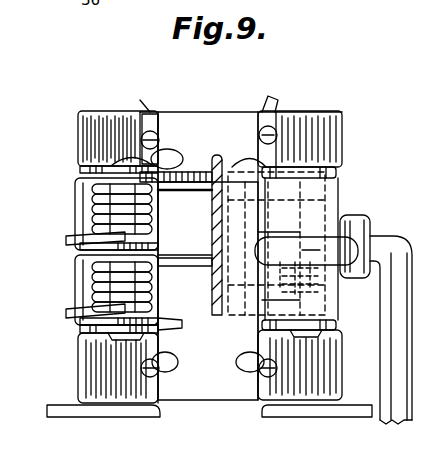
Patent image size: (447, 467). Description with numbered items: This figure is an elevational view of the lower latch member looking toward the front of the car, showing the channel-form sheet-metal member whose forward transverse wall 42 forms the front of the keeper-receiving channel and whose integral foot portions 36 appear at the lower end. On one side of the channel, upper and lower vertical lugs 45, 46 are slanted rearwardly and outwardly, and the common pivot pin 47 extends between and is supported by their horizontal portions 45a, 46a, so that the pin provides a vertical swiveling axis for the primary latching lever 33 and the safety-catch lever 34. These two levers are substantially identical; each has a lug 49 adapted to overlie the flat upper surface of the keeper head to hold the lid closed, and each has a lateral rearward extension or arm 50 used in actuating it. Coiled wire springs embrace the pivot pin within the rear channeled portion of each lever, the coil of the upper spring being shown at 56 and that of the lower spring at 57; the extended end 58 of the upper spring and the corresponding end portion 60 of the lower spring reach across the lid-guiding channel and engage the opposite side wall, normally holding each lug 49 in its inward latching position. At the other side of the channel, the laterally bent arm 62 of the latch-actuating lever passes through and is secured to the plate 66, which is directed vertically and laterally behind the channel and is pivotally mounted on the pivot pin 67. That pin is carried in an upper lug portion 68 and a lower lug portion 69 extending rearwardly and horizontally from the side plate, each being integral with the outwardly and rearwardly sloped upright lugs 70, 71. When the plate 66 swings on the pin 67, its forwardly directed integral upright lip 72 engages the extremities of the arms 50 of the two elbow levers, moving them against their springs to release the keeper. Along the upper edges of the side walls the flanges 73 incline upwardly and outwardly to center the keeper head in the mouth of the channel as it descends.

The primary latching lever 33 is at (76, 261).
The safety-catch lever 34 is at (76, 184).
The foot portions 36 is at (318, 410).
The forward transverse wall 42 is at (220, 364).
The upper vertical lug 45 is at (92, 126).
The horizontal portion of upper lug 45a is at (90, 169).
The lower vertical lug 46 is at (100, 369).
The horizontal portion of lower lug 46a is at (95, 328).
The pivot pin 47 is at (133, 166).
The lever lug 49 is at (183, 322).
The lateral rearward extension 50 is at (190, 172).
The upper spring coil 56 is at (106, 209).
The lower spring coil 57 is at (110, 289).
The extended end of upper spring 58 is at (215, 178).
The end portion of lower spring 60 is at (188, 262).
The laterally bent arm 62 is at (334, 266).
The plate 66 is at (336, 227).
The pivot pin 67 is at (312, 160).
The upper lug portion 68 is at (318, 170).
The lower lug portion 69 is at (325, 338).
The upper upright lug 70 is at (322, 124).
The lower upright lug 71 is at (320, 372).
The upright lip 72 is at (211, 214).
The flanges 73 is at (278, 100).